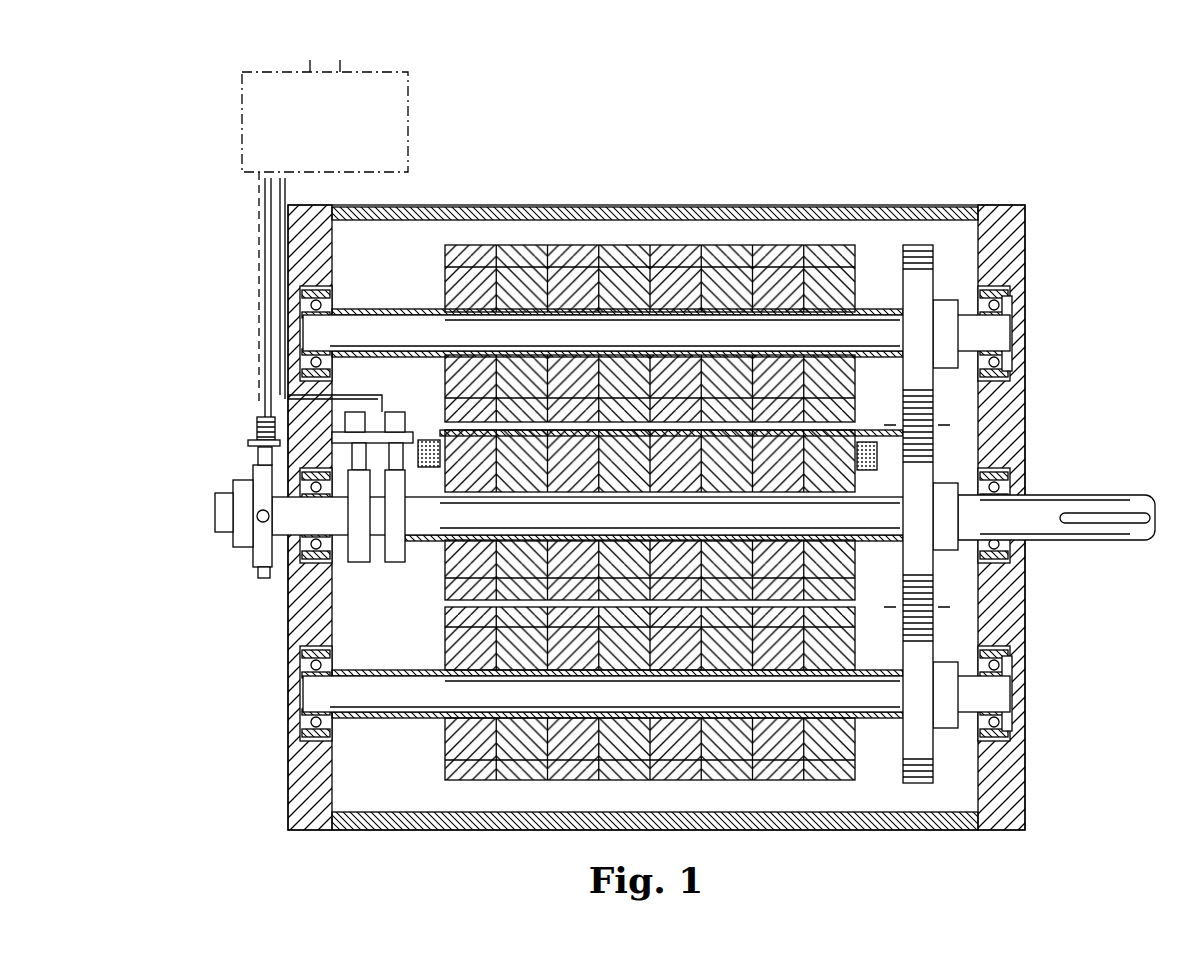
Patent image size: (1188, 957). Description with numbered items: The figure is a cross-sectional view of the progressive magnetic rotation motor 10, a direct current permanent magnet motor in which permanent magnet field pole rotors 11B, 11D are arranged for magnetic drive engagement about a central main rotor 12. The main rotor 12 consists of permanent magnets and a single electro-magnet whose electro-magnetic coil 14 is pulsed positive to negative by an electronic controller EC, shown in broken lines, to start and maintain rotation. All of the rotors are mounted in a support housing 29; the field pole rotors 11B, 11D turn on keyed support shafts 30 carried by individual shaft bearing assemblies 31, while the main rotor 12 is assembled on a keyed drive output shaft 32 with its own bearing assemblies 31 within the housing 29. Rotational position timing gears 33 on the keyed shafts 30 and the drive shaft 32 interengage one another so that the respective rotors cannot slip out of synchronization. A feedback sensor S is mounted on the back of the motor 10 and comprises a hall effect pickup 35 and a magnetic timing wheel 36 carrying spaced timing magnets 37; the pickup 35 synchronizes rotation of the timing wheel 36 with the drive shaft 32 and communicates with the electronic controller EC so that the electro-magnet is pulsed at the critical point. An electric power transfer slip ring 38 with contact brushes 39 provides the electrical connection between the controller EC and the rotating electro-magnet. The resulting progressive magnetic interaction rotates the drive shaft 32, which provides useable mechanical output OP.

The progressive magnetic rotation motor 10 is at (602, 200).
The permanent magnet field pole rotor 11B is at (440, 277).
The permanent magnet field pole rotor 11D is at (440, 768).
The main rotor 12 is at (442, 600).
The electro-magnetic coil 14 is at (863, 440).
The support housing 29 is at (1013, 207).
The keyed support shaft 30 is at (1005, 335).
The shaft bearing assembly 31 is at (312, 290).
The drive output shaft 32 is at (1082, 541).
The rotational position timing gear 33 is at (918, 243).
The hall effect pickup 35 is at (264, 416).
The magnetic timing wheel 36 is at (238, 548).
The timing magnet 37 is at (262, 580).
The electric power transfer slip ring 38 is at (360, 563).
The contact brush 39 is at (360, 432).
The feedback sensor S is at (247, 460).
The electronic controller EC is at (415, 118).
The mechanical output OP is at (1092, 480).